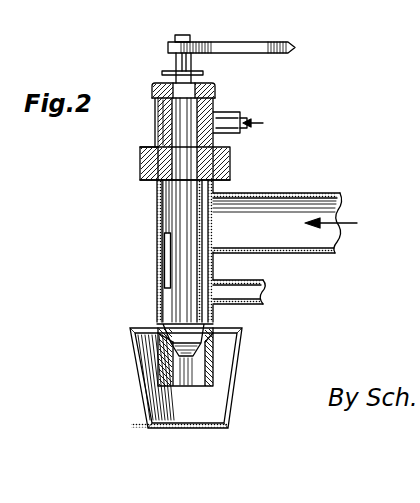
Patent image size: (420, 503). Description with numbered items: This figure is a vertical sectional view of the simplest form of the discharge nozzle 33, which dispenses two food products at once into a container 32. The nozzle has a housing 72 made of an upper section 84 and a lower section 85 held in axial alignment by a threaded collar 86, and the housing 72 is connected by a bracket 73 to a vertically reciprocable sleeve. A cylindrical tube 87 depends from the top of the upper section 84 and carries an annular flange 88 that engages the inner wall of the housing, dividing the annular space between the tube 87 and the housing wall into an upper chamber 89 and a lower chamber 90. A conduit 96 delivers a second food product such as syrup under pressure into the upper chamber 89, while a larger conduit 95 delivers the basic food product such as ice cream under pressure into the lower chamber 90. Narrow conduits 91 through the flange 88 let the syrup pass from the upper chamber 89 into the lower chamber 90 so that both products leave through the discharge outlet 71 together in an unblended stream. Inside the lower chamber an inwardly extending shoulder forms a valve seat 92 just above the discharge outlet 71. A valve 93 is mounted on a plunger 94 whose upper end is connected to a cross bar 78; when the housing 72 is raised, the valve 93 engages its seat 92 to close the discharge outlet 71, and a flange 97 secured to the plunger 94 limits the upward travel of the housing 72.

The cross bar 78 is at (240, 46).
The flange 97 is at (175, 66).
The plunger 94 is at (192, 65).
The upper section 84 is at (216, 104).
The housing 72 is at (158, 122).
The conduit 96 is at (214, 113).
The upper chamber 89 is at (263, 131).
The threaded collar 86 is at (230, 150).
The annular flange 88 is at (231, 174).
The cylindrical tube 87 is at (170, 133).
The discharge nozzle 33 is at (157, 215).
The lower section 85 is at (165, 243).
The lower chamber 90 is at (166, 298).
The narrow conduits 91 is at (160, 263).
The conduit 95 is at (297, 253).
The bracket 73 is at (262, 302).
The valve seat 92 is at (175, 326).
The container 32 is at (237, 369).
The discharge outlet 71 is at (165, 372).
The valve 93 is at (200, 360).